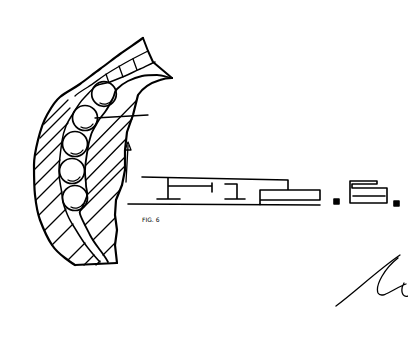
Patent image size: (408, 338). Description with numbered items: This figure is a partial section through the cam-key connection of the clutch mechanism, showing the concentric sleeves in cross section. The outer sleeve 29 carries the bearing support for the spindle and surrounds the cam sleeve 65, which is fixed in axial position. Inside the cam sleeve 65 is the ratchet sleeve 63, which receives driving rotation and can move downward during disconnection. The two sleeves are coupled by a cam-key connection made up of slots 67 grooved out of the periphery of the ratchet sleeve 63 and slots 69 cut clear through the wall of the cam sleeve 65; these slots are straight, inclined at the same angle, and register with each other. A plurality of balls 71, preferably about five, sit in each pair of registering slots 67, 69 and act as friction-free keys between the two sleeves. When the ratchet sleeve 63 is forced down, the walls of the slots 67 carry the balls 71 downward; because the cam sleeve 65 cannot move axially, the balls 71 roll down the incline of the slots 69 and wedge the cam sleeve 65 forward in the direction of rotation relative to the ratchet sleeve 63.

The sleeve 29 is at (132, 46).
The cam sleeve 65 is at (156, 63).
The slots 67 is at (122, 96).
The balls 71 is at (97, 128).
The ratchet sleeve 63 is at (114, 157).
The slots 69 is at (62, 258).